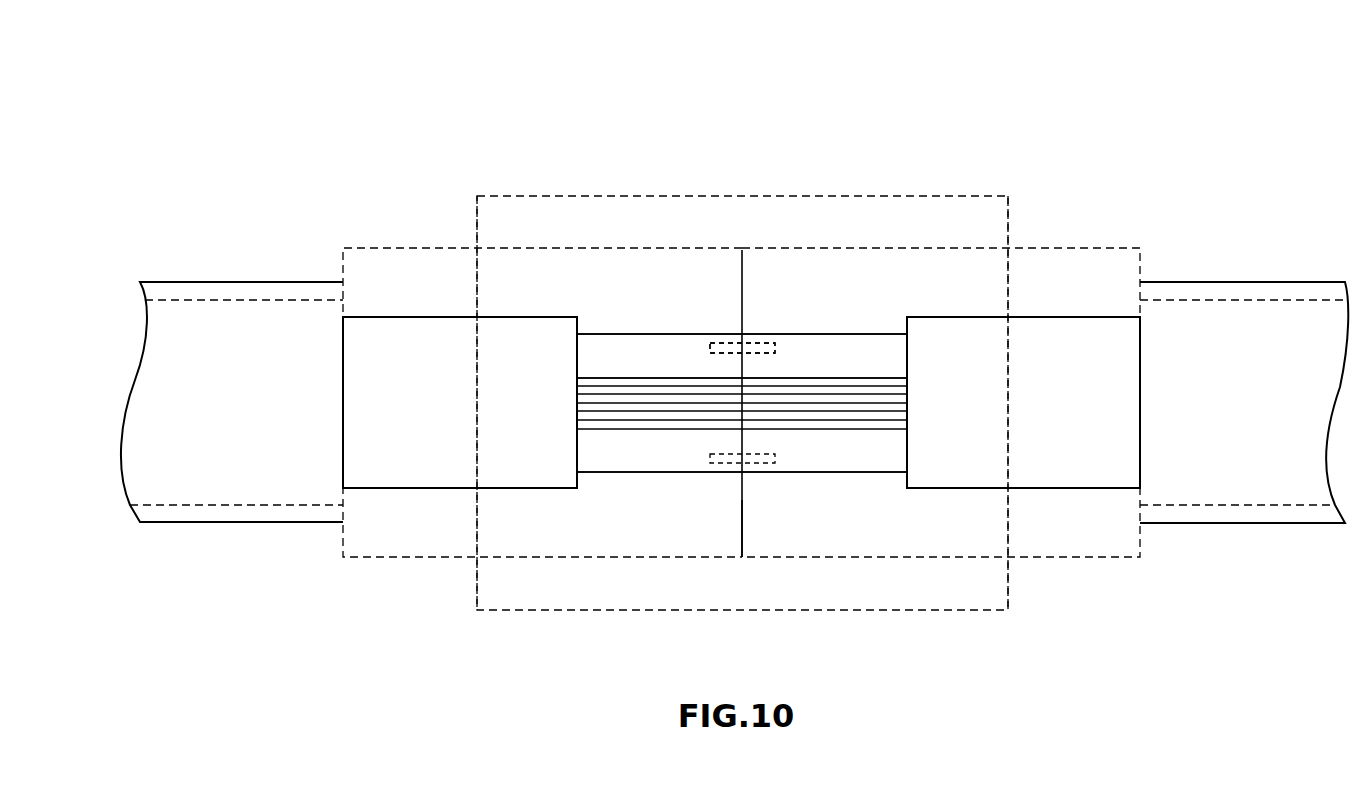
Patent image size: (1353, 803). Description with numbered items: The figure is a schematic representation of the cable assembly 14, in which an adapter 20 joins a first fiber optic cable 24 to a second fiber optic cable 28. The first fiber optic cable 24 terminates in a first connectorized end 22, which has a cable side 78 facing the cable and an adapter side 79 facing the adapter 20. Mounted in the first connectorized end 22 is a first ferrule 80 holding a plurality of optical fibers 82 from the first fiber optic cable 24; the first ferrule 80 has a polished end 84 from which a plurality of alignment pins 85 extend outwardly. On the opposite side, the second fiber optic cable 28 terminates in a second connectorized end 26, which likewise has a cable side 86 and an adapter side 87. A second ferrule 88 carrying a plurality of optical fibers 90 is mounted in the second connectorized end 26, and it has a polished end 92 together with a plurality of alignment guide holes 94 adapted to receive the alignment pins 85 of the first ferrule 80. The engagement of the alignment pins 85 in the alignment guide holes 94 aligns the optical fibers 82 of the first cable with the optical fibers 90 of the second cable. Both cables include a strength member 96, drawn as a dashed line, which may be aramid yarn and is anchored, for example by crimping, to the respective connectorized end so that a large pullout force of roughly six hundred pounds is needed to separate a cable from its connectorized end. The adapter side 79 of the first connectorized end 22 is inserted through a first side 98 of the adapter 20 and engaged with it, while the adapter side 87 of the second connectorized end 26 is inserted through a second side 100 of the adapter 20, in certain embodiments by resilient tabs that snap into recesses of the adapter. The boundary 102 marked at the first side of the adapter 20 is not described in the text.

The cable assembly 14 is at (450, 98).
The adapter 20 is at (697, 196).
The first connectorized end 22 is at (1063, 247).
The first fiber optic cable 24 is at (1247, 282).
The second connectorized end 26 is at (397, 248).
The second fiber optic cable 28 is at (203, 523).
The cable side 78 is at (1142, 265).
The adapter side 79 is at (737, 263).
The first ferrule 80 is at (800, 334).
The optical fibers 82 is at (800, 378).
The polished end 84 is at (742, 447).
The alignment pins 85 is at (753, 343).
The cable side 86 is at (343, 540).
The adapter side 87 is at (742, 557).
The second ferrule 88 is at (588, 334).
The optical fibers 90 is at (605, 378).
The polished end 92 is at (742, 440).
The alignment guide holes 94 is at (725, 343).
The strength member 96 is at (1217, 300).
The first side 98 is at (200, 300).
The second side 100 is at (1008, 223).
The first interface boundary 102 is at (477, 223).